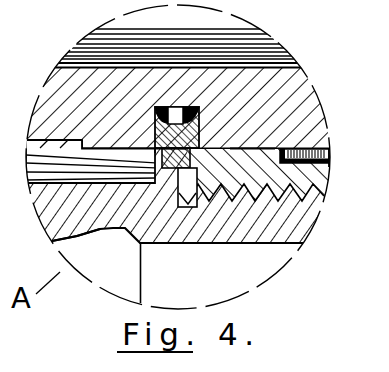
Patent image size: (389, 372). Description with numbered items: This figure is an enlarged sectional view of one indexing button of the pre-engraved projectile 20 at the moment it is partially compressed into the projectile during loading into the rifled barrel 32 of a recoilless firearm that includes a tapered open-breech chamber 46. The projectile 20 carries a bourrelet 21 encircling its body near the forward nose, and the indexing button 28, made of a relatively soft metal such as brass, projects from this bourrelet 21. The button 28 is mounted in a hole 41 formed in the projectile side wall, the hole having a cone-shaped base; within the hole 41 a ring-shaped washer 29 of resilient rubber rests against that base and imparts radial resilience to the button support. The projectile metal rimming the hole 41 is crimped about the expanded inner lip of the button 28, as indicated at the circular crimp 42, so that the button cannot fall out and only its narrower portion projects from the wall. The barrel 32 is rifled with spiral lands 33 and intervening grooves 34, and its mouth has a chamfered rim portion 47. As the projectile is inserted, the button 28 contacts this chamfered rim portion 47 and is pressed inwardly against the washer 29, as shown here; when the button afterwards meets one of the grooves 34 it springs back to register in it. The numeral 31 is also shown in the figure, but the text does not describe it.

The pre-engraved projectile 20 is at (63, 97).
The bourrelet 21 is at (86, 150).
The indexing button 28 is at (163, 128).
The washer 29 is at (200, 109).
The top plate 31 is at (178, 37).
The barrel 32 is at (318, 173).
The land 33 is at (262, 142).
The groove 34 is at (318, 157).
The projectile side wall hole 41 is at (170, 106).
The circular crimp 42 is at (157, 132).
The tapered open-breech chamber 46 is at (76, 240).
The chamfered rim portion 47 is at (190, 152).